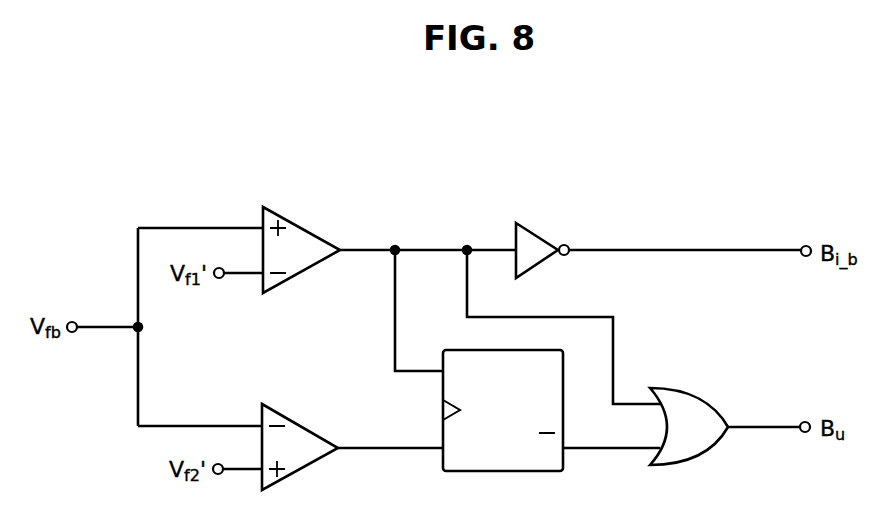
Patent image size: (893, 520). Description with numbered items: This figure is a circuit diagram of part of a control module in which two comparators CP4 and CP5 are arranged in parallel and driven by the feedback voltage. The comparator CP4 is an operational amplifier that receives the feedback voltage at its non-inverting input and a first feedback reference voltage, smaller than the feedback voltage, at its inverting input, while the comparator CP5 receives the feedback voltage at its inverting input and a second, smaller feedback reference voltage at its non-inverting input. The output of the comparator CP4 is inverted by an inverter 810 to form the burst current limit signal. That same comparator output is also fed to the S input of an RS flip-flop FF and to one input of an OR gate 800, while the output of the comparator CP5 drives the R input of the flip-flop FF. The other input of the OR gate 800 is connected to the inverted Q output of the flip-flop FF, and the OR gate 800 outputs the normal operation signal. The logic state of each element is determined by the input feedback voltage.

The inverter 810 is at (540, 233).
The OR gate 800 is at (688, 389).
The comparator CP4 is at (389, 246).
The comparator CP5 is at (352, 444).
The RS flip-flop FF is at (503, 410).